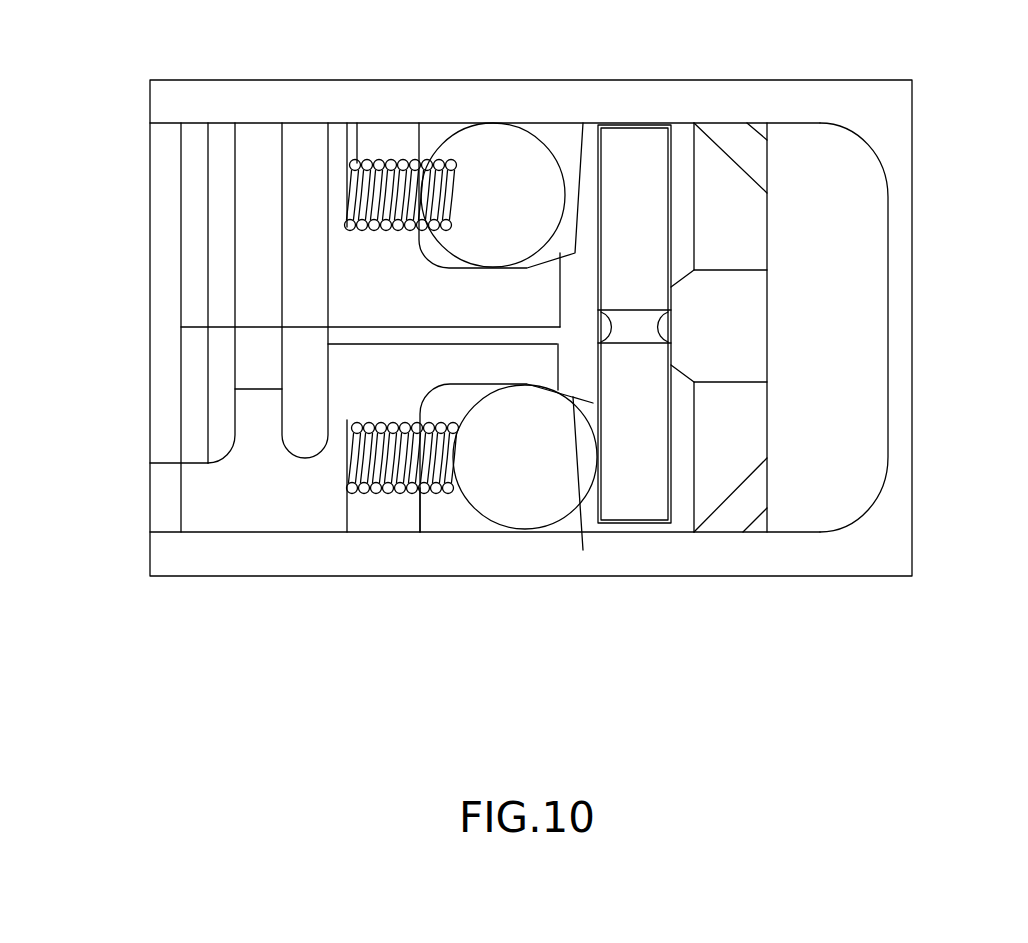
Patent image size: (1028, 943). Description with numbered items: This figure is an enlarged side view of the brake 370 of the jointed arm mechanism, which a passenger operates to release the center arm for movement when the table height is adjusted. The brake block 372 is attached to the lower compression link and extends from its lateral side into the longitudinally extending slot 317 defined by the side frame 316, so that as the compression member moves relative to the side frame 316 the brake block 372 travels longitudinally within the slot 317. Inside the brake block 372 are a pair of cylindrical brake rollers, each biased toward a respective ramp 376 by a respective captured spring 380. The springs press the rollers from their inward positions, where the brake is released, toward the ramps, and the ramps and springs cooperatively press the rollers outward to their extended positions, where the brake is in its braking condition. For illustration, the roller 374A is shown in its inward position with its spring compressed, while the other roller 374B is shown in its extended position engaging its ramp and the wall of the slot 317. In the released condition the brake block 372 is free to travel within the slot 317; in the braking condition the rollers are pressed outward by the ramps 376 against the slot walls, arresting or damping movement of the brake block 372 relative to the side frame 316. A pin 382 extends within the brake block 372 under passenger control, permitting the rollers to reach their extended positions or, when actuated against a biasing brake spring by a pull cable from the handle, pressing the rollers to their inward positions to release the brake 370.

The side frame 316 is at (745, 100).
The slot 317 is at (128, 133).
The brake 370 is at (128, 279).
The brake block 372 is at (263, 513).
The roller 374A is at (493, 138).
The roller 374B is at (508, 513).
The ramp 376 is at (583, 123).
The captured spring 380 is at (403, 163).
The pin 382 is at (652, 510).